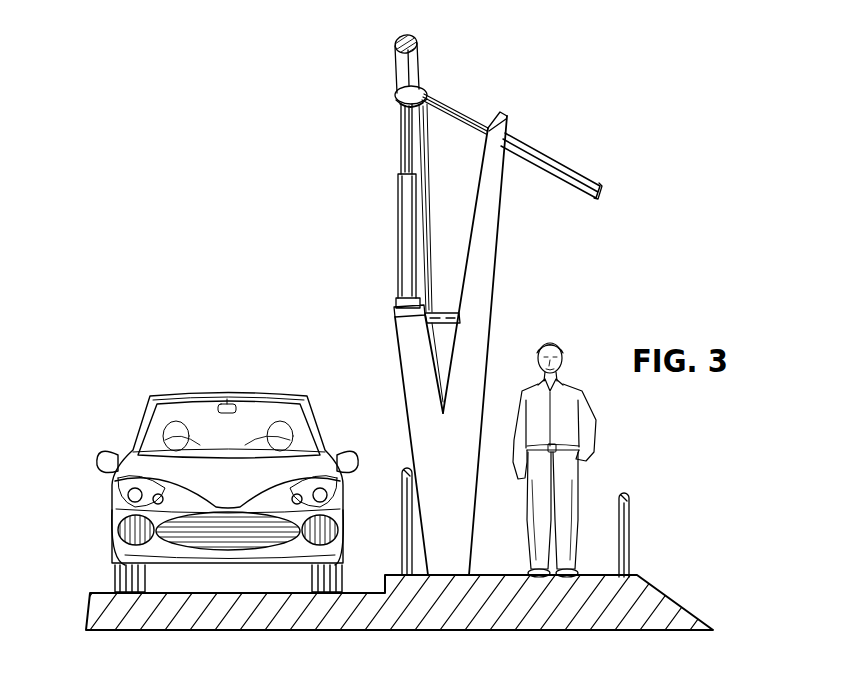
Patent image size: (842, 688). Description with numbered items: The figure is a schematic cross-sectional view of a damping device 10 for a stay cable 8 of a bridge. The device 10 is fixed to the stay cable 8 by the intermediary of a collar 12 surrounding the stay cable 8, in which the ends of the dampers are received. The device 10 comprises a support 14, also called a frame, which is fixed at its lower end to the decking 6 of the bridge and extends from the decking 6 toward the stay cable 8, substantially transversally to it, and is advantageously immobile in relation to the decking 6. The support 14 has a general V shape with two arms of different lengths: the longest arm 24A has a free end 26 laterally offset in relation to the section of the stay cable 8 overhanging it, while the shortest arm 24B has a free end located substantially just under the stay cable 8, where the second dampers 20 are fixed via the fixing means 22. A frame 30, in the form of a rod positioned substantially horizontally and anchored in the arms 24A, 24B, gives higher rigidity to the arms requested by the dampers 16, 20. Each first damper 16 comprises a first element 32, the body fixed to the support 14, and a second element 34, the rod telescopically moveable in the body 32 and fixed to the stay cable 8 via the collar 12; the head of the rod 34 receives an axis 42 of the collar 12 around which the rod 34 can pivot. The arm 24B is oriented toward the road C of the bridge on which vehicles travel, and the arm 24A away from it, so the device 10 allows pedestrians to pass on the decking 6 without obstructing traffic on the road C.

The decking 6 is at (667, 613).
The road C is at (361, 586).
The stay cable 8 is at (403, 72).
The damping device 10 is at (546, 299).
The collar 12 is at (421, 83).
The support 14 is at (473, 516).
The first dampers 16 is at (593, 170).
The second dampers 20 is at (403, 232).
The fixing means 22 is at (392, 300).
The arm 24A is at (498, 255).
The arm 24B is at (407, 412).
The free end 26 is at (515, 109).
The frame 30 is at (446, 314).
The first element 32 is at (545, 152).
The second element 34 is at (474, 117).
The axis 42 is at (425, 92).